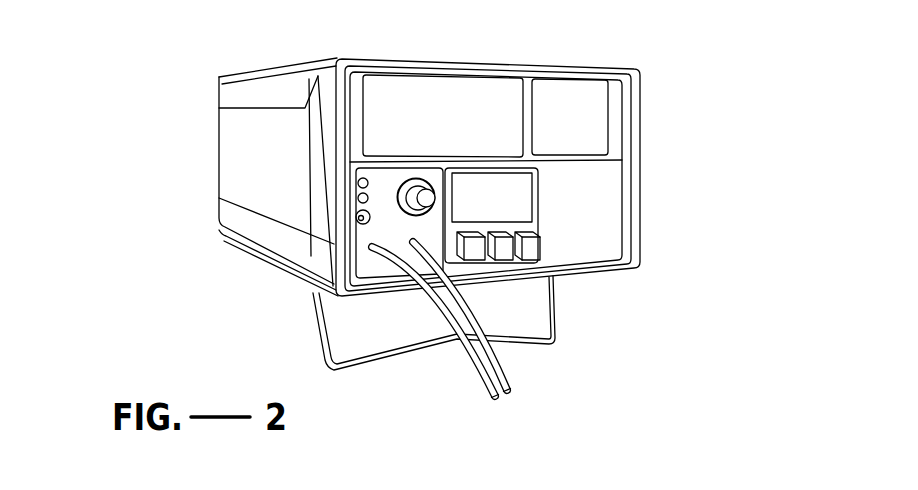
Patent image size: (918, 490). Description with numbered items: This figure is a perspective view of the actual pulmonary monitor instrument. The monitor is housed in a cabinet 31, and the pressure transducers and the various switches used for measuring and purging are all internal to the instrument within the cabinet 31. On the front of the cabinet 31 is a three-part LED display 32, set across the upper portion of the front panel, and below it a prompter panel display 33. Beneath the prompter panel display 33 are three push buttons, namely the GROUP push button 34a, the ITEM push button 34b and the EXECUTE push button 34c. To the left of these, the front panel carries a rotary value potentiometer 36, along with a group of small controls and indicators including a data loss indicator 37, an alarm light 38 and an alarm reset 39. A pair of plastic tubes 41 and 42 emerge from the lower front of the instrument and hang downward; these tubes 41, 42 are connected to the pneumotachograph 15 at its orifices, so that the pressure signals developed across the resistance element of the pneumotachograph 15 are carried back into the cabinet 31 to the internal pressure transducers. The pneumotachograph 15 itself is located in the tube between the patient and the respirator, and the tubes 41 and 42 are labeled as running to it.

The cabinet 31 is at (262, 86).
The three-part LED display 32 is at (602, 57).
The prompter panel display 33 is at (530, 201).
The GROUP push button 34a is at (478, 259).
The ITEM push button 34b is at (508, 257).
The EXECUTE push button 34c is at (540, 247).
The rotary value potentiometer 36 is at (398, 215).
The push button 37 is at (357, 183).
The alarm light 38 is at (357, 198).
The alarm reset 39 is at (355, 217).
The plastic tube 41 is at (479, 371).
The plastic tube 42 is at (501, 371).
The pneumotachograph 15 is at (465, 433).